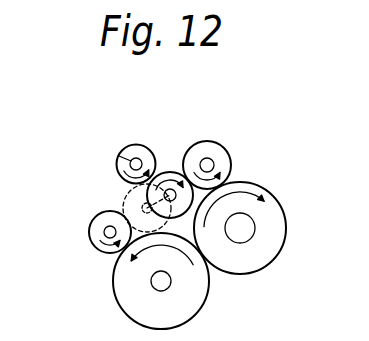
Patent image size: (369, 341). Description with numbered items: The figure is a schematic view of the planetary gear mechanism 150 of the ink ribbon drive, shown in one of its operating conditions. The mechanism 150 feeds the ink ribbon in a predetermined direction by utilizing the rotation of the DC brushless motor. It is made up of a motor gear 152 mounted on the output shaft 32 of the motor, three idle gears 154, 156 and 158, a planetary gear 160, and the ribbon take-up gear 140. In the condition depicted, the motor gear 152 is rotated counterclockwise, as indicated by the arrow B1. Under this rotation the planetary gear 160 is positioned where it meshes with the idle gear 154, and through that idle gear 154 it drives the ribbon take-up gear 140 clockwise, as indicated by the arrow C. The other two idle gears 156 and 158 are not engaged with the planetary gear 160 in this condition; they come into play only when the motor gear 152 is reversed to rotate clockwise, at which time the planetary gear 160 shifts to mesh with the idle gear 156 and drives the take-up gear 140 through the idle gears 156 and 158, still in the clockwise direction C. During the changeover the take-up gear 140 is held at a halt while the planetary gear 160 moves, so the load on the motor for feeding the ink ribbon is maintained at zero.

The planetary gear mechanism 150 is at (193, 91).
The output shaft 32 is at (119, 156).
The motor gear 152 is at (154, 178).
The arrow B1 is at (178, 173).
The planetary gear 160 is at (123, 197).
The idle gear 154 is at (230, 155).
The arrow C is at (263, 188).
The ribbon take-up gear 140 is at (286, 228).
The idle gear 156 is at (93, 244).
The idle gear 158 is at (201, 308).